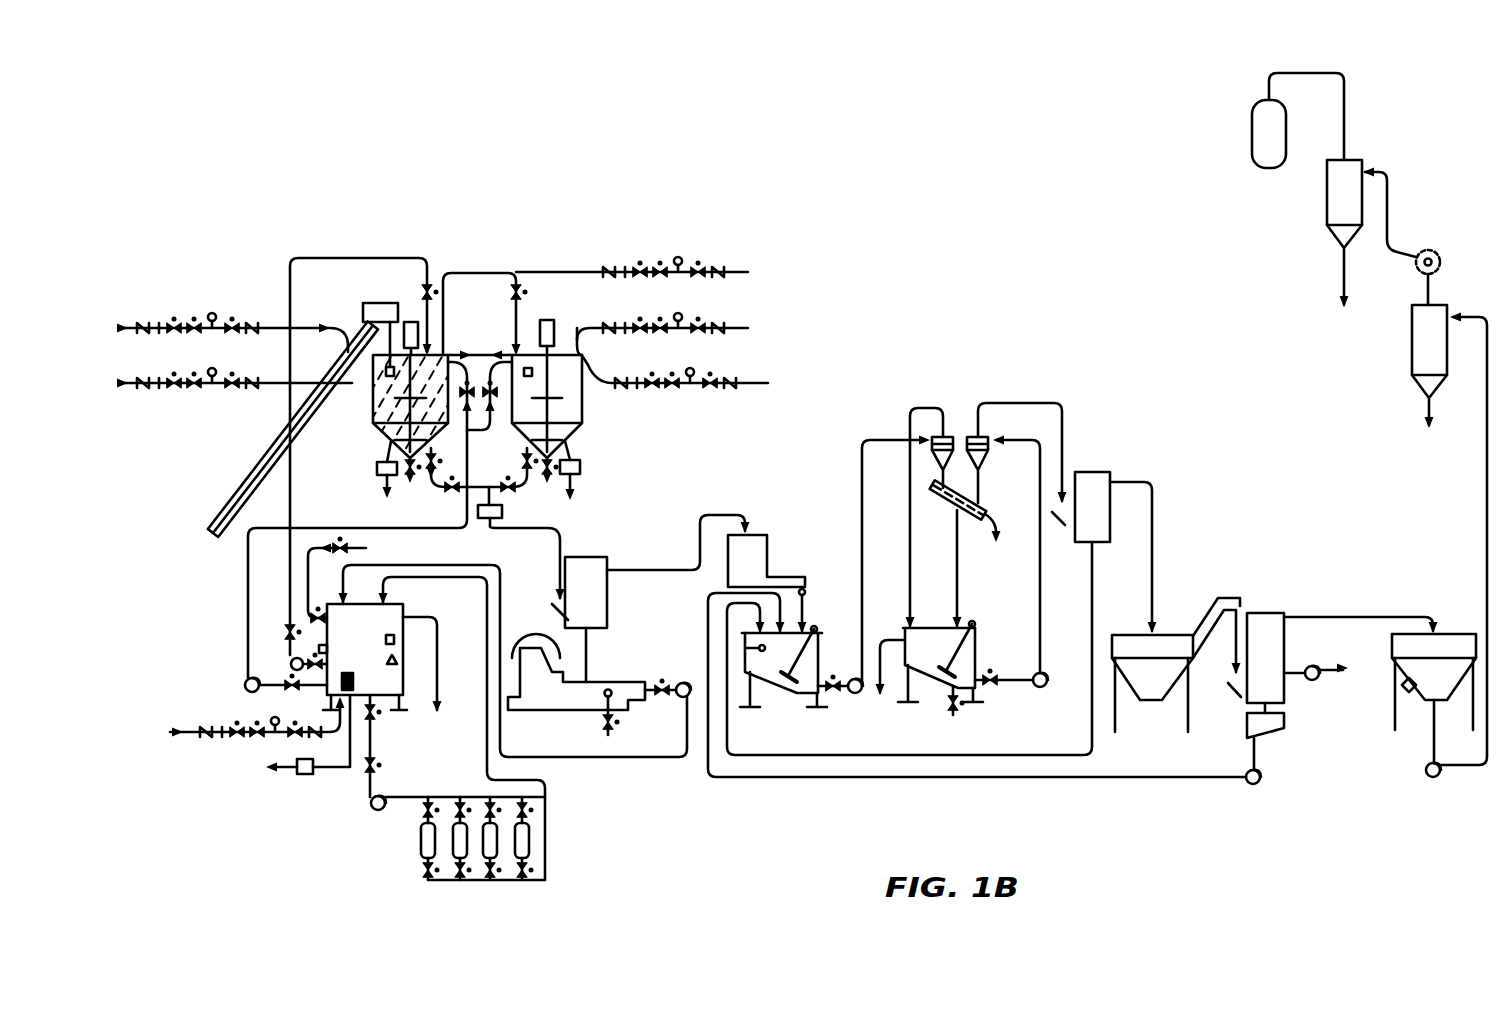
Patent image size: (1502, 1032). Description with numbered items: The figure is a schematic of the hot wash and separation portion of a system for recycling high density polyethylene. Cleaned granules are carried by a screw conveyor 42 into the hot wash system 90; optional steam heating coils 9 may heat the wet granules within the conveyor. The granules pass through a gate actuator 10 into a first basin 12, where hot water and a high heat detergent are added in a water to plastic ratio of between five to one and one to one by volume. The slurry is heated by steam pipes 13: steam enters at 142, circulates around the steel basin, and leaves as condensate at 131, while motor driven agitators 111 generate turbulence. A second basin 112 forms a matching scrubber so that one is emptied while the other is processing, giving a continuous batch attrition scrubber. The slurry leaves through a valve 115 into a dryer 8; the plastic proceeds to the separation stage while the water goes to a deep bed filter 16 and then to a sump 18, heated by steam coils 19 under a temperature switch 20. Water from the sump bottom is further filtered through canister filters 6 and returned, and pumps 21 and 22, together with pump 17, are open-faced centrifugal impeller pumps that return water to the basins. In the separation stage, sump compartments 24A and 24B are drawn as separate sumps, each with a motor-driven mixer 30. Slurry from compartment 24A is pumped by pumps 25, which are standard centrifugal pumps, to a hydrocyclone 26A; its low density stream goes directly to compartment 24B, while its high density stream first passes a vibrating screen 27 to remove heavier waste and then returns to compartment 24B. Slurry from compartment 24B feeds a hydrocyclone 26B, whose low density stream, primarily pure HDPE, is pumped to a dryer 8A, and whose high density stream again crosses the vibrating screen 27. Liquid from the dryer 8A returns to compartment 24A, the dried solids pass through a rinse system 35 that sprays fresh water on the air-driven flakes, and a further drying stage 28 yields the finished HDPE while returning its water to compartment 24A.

The hot wash system 90 is at (336, 280).
The steam heating coils 9 is at (250, 318).
The steam pipes 13 is at (256, 396).
The screw conveyor 42 is at (250, 485).
The gate actuator 10 is at (362, 312).
The motor driven agitators 111 is at (411, 322).
The first basin 12 is at (372, 445).
The basin 112 is at (590, 405).
The steam inlet 142 is at (380, 385).
The condensate outlet 131 is at (380, 478).
The valve 115 is at (504, 512).
The temperature switch 20 is at (330, 643).
The sump 18 is at (403, 604).
The steam coils 19 is at (355, 682).
The pump 21 is at (290, 656).
The pump 22 is at (248, 685).
The canister filters 6 is at (410, 847).
The dryer 8 is at (598, 591).
The deep bed filter 16 is at (611, 675).
The pump 17 is at (683, 700).
The sump compartment 24A is at (779, 690).
The motor-driven mixer 30 is at (818, 625).
The pumps 25 is at (855, 693).
The hydrocyclone 26A is at (945, 430).
The hydrocyclone 26B is at (978, 430).
The vibrating screen 27 is at (990, 510).
The sump compartment 24B is at (935, 692).
The dryer 8A is at (1093, 485).
The rinse system 35 is at (1158, 714).
The further drying stage 28 is at (1292, 689).